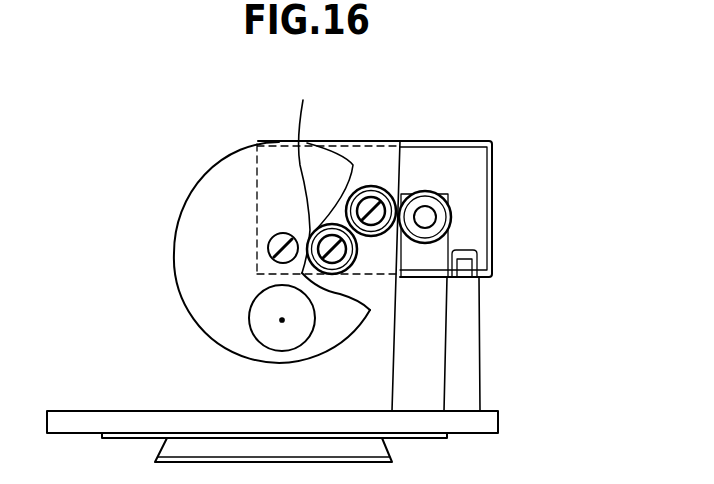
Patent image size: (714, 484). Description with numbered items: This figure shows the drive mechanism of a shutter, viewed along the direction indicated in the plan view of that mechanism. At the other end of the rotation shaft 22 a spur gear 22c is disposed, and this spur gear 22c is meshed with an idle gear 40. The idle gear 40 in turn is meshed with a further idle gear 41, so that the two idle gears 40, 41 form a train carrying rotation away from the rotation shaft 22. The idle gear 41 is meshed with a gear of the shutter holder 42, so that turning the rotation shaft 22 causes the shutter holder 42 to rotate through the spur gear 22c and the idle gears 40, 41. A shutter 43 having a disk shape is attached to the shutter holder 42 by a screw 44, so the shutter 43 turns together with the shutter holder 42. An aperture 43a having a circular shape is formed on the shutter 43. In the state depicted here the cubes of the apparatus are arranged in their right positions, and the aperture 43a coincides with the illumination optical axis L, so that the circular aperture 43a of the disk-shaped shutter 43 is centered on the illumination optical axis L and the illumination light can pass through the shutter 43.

The idle gear 40 is at (378, 187).
The idle gear 41 is at (336, 224).
The shutter holder 42 is at (324, 175).
The shutter 43 is at (200, 209).
The aperture 43a is at (303, 327).
The screw 44 is at (268, 245).
The rotation shaft 22 is at (433, 217).
The spur gear 22c is at (450, 204).
The illumination optical axis L is at (282, 320).